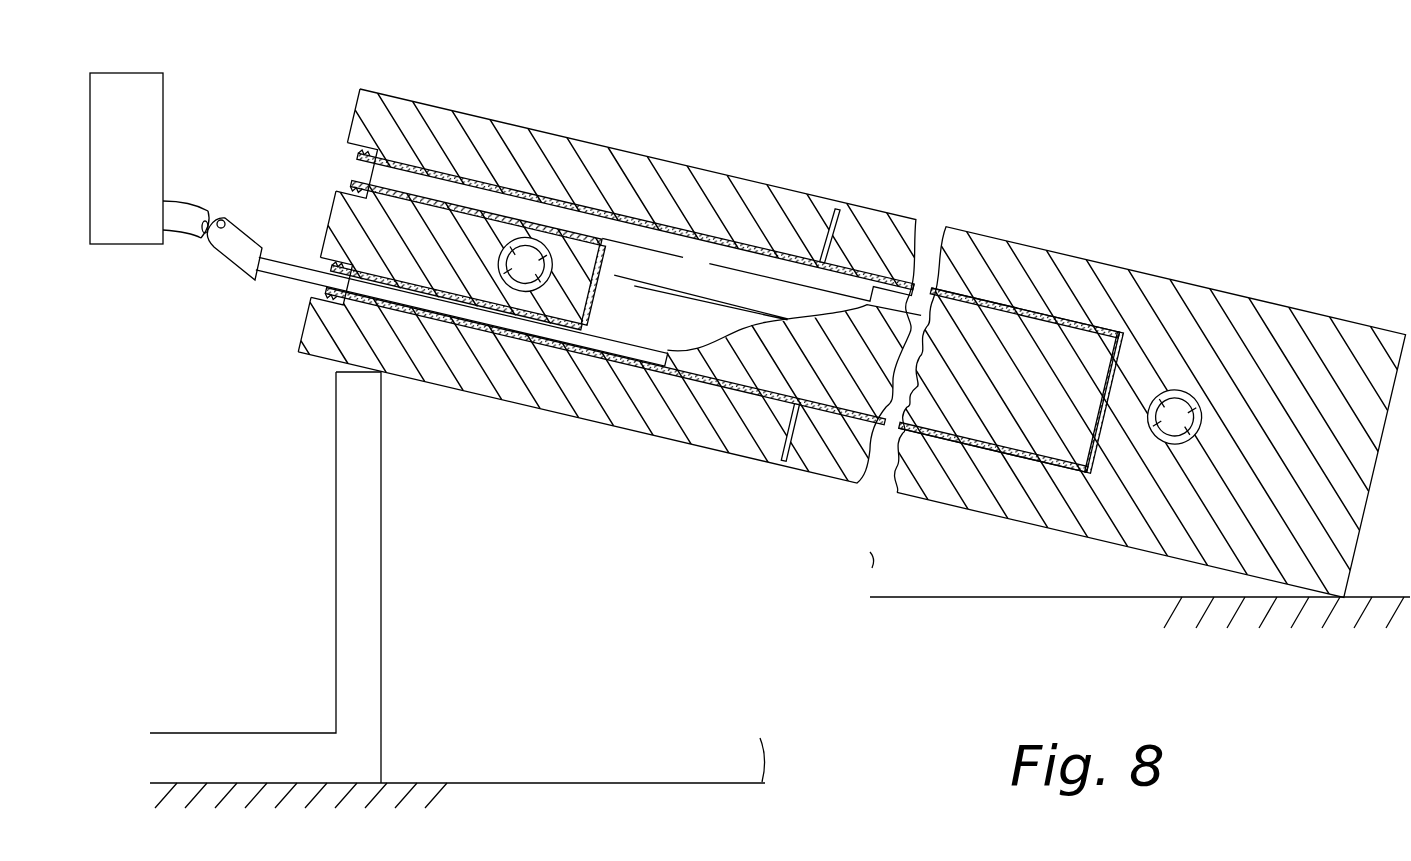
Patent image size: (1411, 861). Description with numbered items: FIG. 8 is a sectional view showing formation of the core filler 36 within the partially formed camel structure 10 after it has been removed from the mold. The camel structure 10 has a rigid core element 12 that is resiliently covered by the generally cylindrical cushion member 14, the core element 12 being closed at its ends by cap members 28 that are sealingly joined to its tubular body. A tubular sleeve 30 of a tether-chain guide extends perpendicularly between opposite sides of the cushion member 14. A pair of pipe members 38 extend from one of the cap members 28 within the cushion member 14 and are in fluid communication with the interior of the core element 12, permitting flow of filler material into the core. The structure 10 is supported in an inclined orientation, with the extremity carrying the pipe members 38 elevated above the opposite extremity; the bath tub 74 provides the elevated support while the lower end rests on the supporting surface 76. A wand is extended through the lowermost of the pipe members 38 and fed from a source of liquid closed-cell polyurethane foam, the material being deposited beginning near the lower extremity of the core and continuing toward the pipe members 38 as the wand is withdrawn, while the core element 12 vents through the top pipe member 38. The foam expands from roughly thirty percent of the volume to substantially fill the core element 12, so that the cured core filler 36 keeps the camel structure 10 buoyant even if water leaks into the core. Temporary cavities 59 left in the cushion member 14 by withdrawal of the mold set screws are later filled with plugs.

The camel structure 10 is at (1130, 88).
The core element 12 is at (1060, 318).
The cushion member 14 is at (1020, 245).
The cap members 28 is at (601, 280).
The tubular sleeve 30 is at (1151, 410).
The core filler 36 is at (983, 392).
The pipe members 38 is at (502, 188).
The temporary cavities 59 is at (840, 218).
The bath tub 74 is at (336, 536).
The supporting surface 76 is at (550, 783).